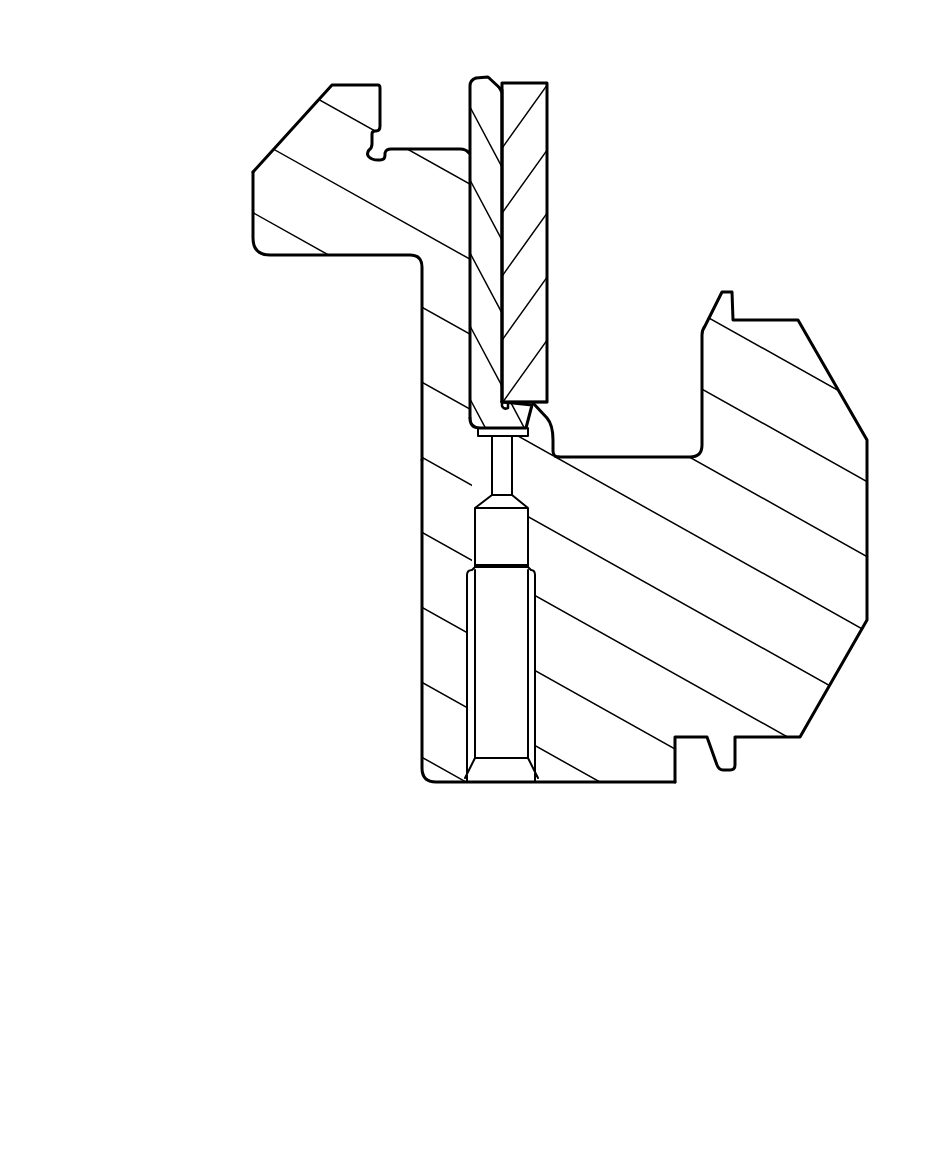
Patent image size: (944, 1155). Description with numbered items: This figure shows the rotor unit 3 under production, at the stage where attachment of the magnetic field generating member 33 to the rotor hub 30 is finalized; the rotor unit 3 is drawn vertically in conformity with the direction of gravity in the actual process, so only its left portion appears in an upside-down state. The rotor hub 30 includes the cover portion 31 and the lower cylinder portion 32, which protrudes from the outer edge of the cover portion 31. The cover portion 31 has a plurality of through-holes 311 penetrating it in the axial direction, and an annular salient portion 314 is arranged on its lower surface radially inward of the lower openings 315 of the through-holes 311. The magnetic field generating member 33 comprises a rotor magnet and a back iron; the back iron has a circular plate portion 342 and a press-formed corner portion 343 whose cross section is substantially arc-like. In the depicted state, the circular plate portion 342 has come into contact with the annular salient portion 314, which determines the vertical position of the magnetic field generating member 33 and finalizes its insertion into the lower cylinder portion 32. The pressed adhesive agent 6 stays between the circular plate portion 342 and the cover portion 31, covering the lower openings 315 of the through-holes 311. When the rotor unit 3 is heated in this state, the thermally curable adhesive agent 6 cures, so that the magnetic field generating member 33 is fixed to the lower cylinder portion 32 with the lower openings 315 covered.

The rotor unit 3 is at (117, 225).
The rotor hub 30 is at (180, 434).
The cover portion 31 is at (445, 573).
The lower cylinder portion 32 is at (445, 348).
The magnetic field generating member 33 is at (480, 142).
The adhesive agent 6 is at (480, 430).
The through-holes 311 is at (474, 689).
The annular salient portion 314 is at (547, 433).
The lower openings 315 is at (477, 456).
The circular plate portion 342 is at (547, 410).
The corner portion 343 is at (480, 410).